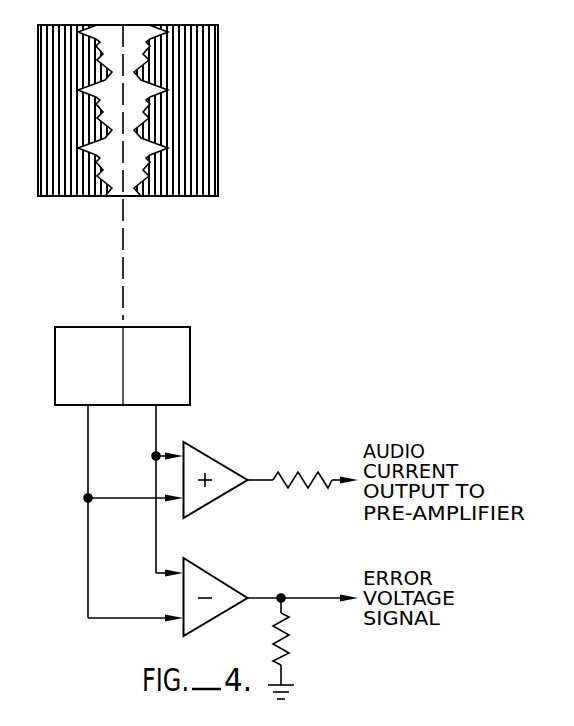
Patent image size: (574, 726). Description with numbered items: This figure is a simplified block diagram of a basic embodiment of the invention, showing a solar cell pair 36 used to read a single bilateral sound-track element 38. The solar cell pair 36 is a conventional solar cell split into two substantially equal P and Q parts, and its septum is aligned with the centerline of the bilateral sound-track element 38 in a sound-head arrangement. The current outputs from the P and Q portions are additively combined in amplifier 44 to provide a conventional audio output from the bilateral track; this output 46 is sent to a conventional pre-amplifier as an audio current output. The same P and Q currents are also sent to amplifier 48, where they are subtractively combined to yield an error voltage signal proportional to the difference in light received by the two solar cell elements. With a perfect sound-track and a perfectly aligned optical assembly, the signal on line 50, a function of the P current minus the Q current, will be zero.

The solar cell pair 36 is at (190, 366).
The bilateral sound-track element 38 is at (145, 27).
The amplifier 44 is at (212, 458).
The output 46 is at (326, 476).
The amplifier 48 is at (208, 621).
The line 50 is at (322, 600).